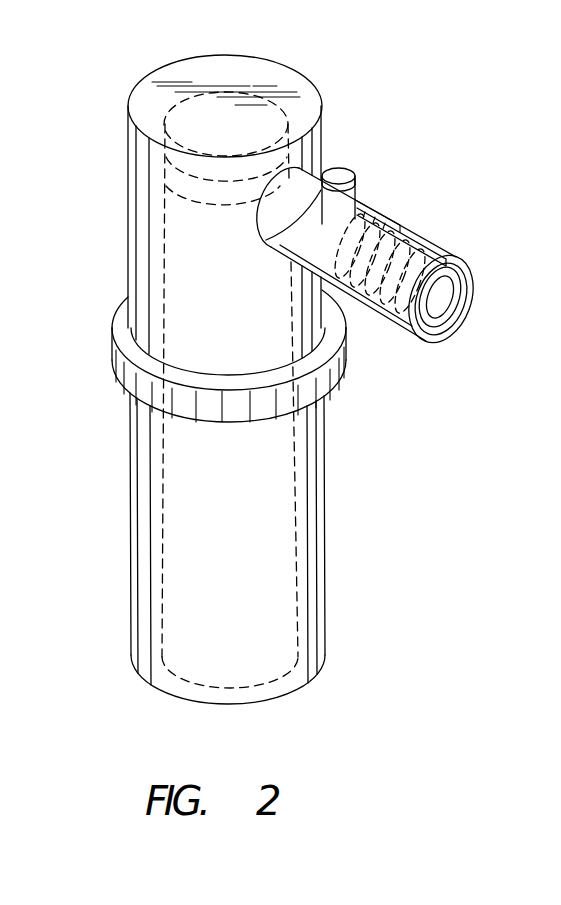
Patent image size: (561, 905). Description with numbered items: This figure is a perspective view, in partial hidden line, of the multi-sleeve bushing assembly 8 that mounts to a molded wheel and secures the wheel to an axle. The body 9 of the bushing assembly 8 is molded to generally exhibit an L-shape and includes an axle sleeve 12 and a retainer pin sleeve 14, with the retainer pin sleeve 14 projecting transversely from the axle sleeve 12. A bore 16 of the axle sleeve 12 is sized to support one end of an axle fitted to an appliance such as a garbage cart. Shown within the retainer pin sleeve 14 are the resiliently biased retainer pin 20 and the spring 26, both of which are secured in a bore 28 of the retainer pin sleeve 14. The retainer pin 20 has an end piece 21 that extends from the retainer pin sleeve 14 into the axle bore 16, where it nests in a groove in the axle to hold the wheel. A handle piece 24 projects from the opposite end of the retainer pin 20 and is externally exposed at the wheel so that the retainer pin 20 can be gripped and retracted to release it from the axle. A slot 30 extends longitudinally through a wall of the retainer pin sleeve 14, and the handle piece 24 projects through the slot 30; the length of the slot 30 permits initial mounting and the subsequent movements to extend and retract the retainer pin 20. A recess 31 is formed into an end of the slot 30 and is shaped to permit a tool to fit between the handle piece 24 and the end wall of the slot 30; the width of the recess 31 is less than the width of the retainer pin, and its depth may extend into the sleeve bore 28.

The multi-sleeve bushing assembly 8 is at (393, 440).
The body 9 is at (325, 483).
The axle sleeve 12 is at (128, 488).
The retainer pin sleeve 14 is at (450, 230).
The bore 16 is at (325, 657).
The retainer pin 20 is at (357, 188).
The end piece 21 is at (262, 183).
The handle piece 24 is at (347, 169).
The spring 26 is at (447, 310).
The bore 28 is at (398, 325).
The slot 30 is at (390, 214).
The recess 31 is at (268, 248).